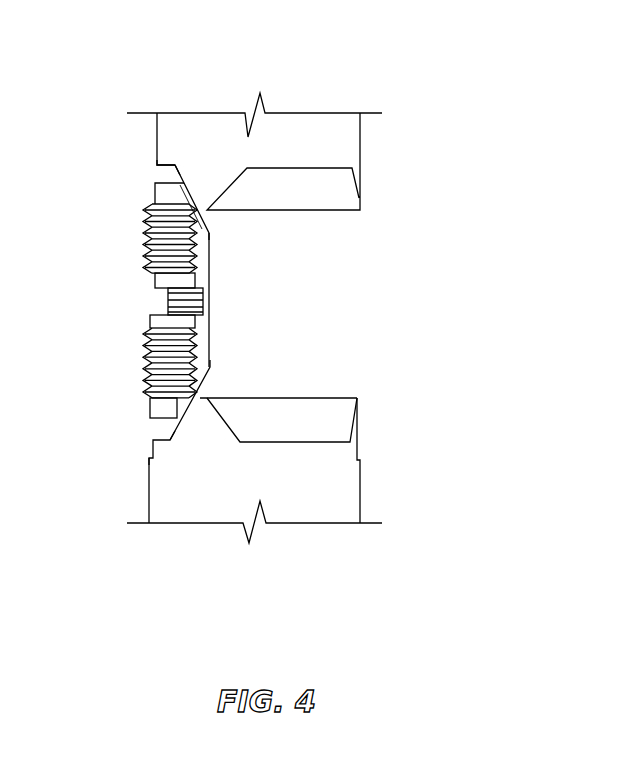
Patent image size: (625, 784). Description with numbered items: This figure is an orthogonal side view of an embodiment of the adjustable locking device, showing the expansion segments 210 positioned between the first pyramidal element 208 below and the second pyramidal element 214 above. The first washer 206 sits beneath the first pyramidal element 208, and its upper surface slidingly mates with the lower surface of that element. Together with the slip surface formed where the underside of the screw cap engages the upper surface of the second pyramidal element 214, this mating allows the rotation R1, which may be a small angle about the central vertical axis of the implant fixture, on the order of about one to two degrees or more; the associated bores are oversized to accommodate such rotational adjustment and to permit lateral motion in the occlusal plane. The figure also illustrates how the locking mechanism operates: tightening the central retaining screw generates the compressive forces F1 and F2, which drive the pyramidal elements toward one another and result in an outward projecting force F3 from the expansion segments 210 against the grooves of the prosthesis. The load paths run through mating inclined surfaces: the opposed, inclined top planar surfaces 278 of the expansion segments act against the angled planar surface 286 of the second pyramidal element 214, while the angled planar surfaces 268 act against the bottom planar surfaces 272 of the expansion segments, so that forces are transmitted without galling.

The first washer 206 is at (381, 505).
The first pyramidal element 208 is at (381, 430).
The expansion segments 210 is at (128, 225).
The second pyramidal element 214 is at (380, 175).
The angled planar surfaces 268 is at (166, 428).
The bottom planar surfaces 272 is at (210, 378).
The inclined top planar surfaces 278 is at (212, 226).
The angled planar surface 286 is at (158, 172).
The compressive force F1 is at (254, 72).
The compressive force F2 is at (253, 571).
The outward projecting force F3 is at (139, 428).
The rotation R1 is at (426, 187).